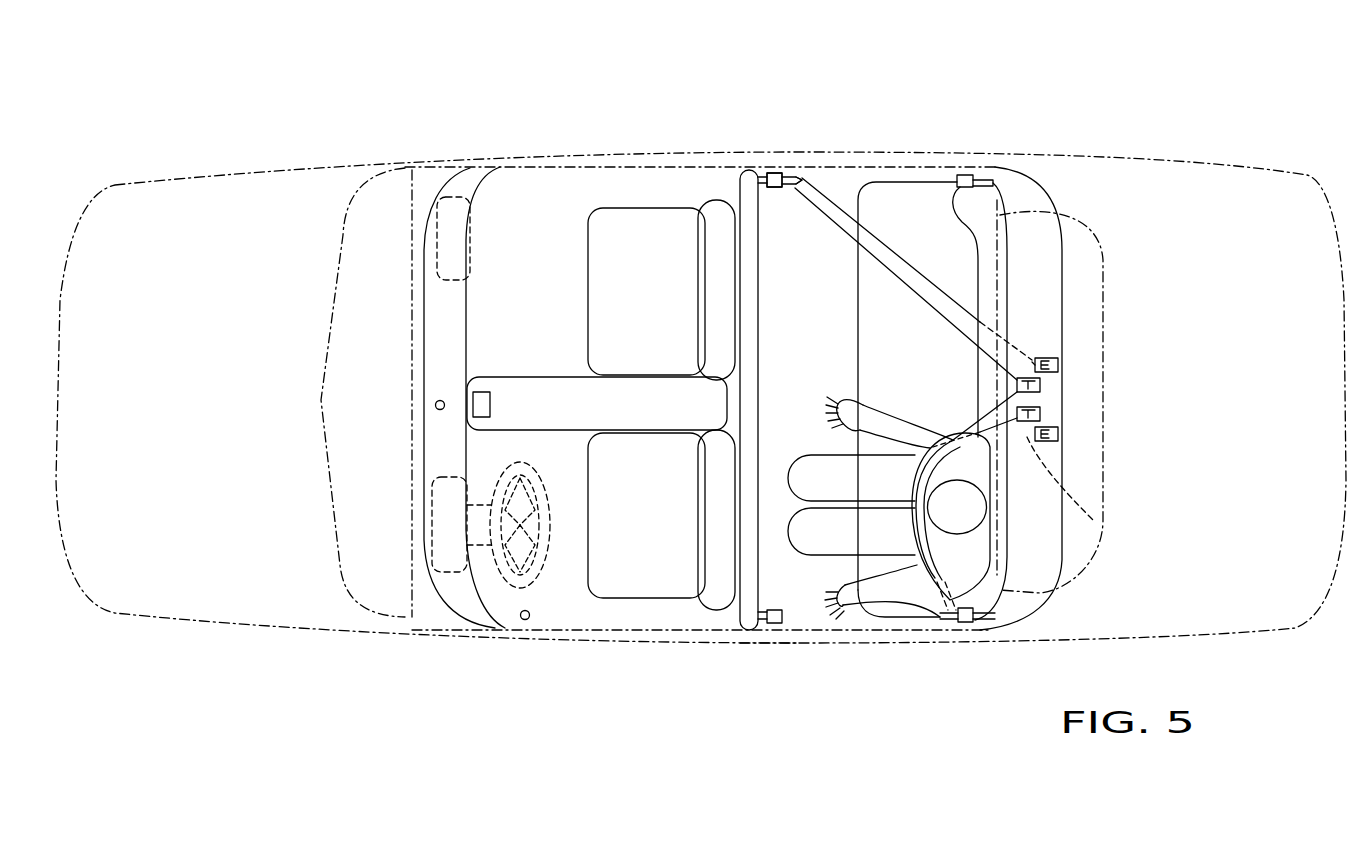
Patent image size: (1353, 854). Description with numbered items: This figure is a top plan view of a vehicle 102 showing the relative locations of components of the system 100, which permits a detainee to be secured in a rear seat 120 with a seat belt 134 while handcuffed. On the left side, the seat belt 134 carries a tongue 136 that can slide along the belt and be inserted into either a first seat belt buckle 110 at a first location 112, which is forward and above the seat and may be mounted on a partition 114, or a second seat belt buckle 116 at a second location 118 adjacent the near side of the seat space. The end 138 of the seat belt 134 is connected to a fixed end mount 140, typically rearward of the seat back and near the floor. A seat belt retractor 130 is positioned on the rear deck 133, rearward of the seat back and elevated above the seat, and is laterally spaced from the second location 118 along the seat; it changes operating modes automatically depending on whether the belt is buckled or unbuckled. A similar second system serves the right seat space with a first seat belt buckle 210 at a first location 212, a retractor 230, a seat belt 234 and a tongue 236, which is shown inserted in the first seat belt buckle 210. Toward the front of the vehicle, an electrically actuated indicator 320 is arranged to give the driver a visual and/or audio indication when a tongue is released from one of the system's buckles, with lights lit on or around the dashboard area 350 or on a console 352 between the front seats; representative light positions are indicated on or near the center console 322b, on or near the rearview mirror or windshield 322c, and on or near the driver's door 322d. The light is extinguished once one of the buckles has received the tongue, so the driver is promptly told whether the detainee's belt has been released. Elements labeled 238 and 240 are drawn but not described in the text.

The system 100 is at (1042, 124).
The vehicle 102 is at (617, 155).
The first seat belt buckle 110 is at (782, 616).
The first location 112 is at (771, 650).
The partition 114 is at (752, 263).
The second seat belt buckle 116 is at (967, 623).
The second location 118 is at (980, 622).
The rear seat 120 is at (911, 432).
The seat belt retractor 130 is at (1040, 414).
The rear deck 133 is at (1038, 278).
The seat belt 134 is at (958, 448).
The tongue 136 is at (950, 622).
The end 138 is at (1030, 440).
The fixed end mount 140 is at (1058, 435).
The first seat belt buckle 210 is at (787, 178).
The first location 212 is at (781, 153).
The retractor 230 is at (1040, 385).
The seat belt 234 is at (886, 245).
The tongue 236 is at (800, 180).
The shoulder belt buckle 238 is at (1030, 360).
The buckle sensor 240 is at (1058, 365).
The indicator 320 is at (538, 265).
The center console light location 322b is at (480, 392).
The rearview mirror/windshield light location 322c is at (436, 405).
The driver's door light location 322d is at (521, 622).
The dashboard area 350 is at (443, 323).
The console 352 is at (545, 387).